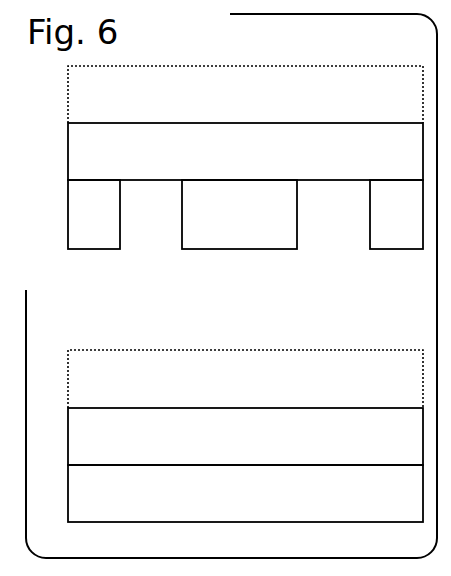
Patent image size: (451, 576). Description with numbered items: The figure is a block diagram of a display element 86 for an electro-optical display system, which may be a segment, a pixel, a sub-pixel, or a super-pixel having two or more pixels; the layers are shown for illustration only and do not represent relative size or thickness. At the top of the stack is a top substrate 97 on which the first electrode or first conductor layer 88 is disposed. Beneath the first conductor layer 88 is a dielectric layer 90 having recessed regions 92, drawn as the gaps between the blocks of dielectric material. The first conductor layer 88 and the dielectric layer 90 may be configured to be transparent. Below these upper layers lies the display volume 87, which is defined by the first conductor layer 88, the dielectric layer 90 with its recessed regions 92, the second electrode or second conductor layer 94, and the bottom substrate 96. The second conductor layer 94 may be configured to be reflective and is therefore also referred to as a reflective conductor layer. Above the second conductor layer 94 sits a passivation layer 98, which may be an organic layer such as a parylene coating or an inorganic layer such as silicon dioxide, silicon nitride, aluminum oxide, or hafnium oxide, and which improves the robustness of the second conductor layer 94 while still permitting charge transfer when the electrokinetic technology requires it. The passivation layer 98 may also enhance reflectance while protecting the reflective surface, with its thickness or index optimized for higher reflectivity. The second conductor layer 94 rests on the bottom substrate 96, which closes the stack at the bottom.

The display element 86 is at (363, 50).
The display volume 87 is at (73, 298).
The top substrate 97 is at (258, 107).
The first conductor layer 88 is at (258, 162).
The dielectric layer 90 is at (258, 227).
The recessed regions 92 is at (324, 229).
The passivation layer 98 is at (258, 390).
The second conductor layer 94 is at (258, 448).
The bottom substrate 96 is at (258, 505).